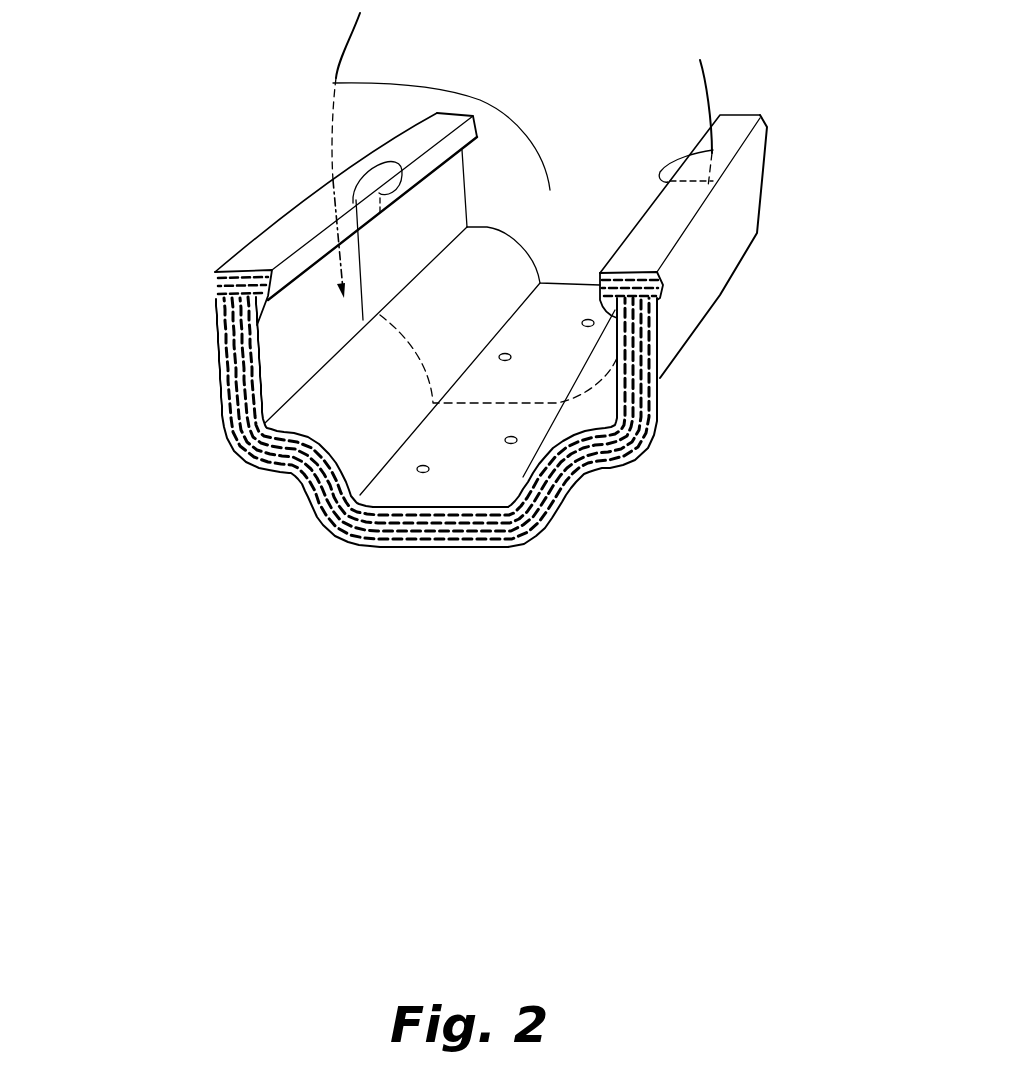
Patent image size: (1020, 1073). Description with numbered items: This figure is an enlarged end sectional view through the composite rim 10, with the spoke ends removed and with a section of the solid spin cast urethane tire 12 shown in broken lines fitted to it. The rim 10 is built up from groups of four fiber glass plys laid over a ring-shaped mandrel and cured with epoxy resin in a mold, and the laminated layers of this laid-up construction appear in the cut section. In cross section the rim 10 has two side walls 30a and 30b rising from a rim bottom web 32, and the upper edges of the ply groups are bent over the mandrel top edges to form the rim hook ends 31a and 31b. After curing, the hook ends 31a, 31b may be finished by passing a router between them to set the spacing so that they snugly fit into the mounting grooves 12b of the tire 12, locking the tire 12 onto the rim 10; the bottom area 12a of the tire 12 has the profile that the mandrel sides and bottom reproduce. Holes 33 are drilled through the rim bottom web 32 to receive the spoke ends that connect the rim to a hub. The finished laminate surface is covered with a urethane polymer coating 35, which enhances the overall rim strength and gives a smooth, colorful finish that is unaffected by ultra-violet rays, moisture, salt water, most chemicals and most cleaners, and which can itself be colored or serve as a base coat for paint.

The rim 10 is at (160, 432).
The tire 12 is at (558, 208).
The bottom area of tire 12a is at (333, 83).
The mounting grooves of tire 12b is at (362, 151).
The rim side wall 30a is at (213, 345).
The rim side wall 30b is at (707, 288).
The rim hook end 31a is at (258, 248).
The rim hook end 31b is at (657, 220).
The rim bottom web 32 is at (455, 553).
The holes 33 is at (429, 471).
The urethane polymer coating 35 is at (262, 220).